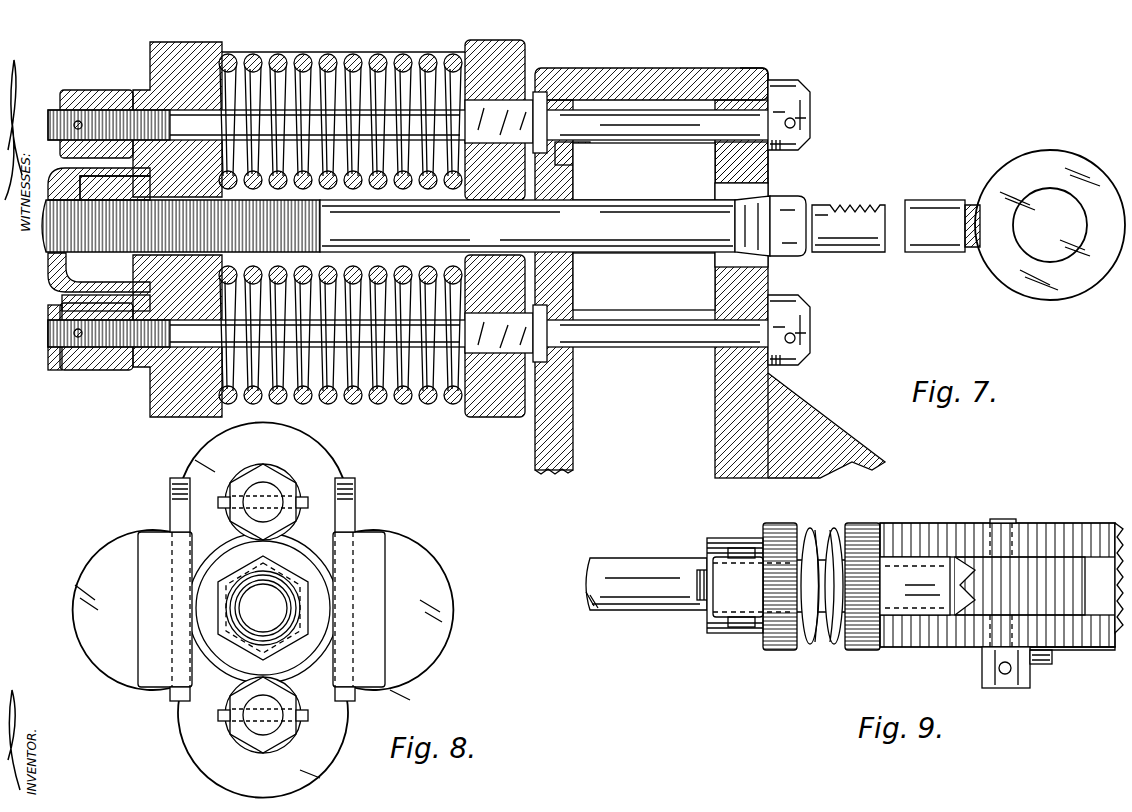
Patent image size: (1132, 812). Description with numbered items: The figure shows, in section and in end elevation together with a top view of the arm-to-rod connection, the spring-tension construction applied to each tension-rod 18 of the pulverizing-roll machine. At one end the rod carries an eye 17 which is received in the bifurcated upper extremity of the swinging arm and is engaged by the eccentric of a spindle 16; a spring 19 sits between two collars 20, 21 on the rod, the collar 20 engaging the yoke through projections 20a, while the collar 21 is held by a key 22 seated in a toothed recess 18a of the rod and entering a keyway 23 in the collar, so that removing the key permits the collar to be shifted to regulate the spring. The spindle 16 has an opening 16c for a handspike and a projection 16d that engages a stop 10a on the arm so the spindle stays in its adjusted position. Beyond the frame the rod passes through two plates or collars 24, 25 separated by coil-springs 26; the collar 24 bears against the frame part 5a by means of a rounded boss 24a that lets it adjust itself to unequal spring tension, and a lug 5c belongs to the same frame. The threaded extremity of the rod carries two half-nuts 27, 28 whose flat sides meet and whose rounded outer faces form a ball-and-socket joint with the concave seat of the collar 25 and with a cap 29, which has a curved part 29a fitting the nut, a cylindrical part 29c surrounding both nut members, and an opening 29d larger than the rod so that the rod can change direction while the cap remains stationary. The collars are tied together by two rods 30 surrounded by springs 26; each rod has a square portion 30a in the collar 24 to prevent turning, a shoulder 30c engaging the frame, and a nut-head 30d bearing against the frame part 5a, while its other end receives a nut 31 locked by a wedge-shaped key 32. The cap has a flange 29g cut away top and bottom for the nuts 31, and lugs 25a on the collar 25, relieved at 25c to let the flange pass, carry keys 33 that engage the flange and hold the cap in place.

In FIG. 7, the frame part 5a is at (768, 72).
In FIG. 7, the lug of the frame 5c is at (575, 172).
In FIG. 9, the stop 10a is at (1052, 658).
In FIG. 9, the spindle 16 is at (1012, 520).
In FIG. 9, the opening 16c is at (1003, 675).
In FIG. 9, the projection 16d is at (1040, 666).
In FIG. 7, the eye 17 is at (1041, 152).
In FIG. 9, the eye 17 is at (1035, 560).
In FIG. 7, the tension-rod 18 is at (932, 200).
In FIG. 9, the tension-rod 18 is at (630, 568).
In FIG. 7, the recess 18a is at (846, 204).
In FIG. 9, the recess 18a is at (700, 592).
In FIG. 9, the spring 19 is at (825, 528).
In FIG. 9, the collar 20 is at (872, 523).
In FIG. 9, the projections 20a is at (905, 555).
In FIG. 9, the collar 21 is at (778, 523).
In FIG. 7, the key 22 is at (758, 192).
In FIG. 9, the key 22 is at (745, 630).
In FIG. 7, the keyway 23 is at (588, 200).
In FIG. 7, the collar 24 is at (528, 62).
In FIG. 7, the boss 24a is at (530, 272).
In FIG. 7, the collar 25 is at (150, 61).
In FIG. 8, the lugs 25a is at (143, 588).
In FIG. 8, the cut-away portion of lug 25c is at (166, 634).
In FIG. 7, the coil-springs 26 is at (366, 398).
In FIG. 7, the half-nut 27 is at (128, 277).
In FIG. 7, the half-nut 28 is at (64, 304).
In FIG. 7, the cap 29 is at (66, 286).
In FIG. 7, the curved part 29a is at (66, 170).
In FIG. 7, the cylindrical part 29c is at (50, 332).
In FIG. 7, the opening 29d is at (56, 262).
In FIG. 8, the flange 29g is at (316, 548).
In FIG. 7, the rods 30 is at (425, 405).
In FIG. 8, the rods 30 is at (249, 516).
In FIG. 7, the angular portion 30a is at (547, 108).
In FIG. 7, the shoulder 30c is at (600, 68).
In FIG. 7, the nut-heads 30d is at (802, 96).
In FIG. 7, the nuts 31 is at (64, 95).
In FIG. 8, the nuts 31 is at (286, 490).
In FIG. 7, the keys 32 is at (78, 119).
In FIG. 8, the keys 32 is at (225, 496).
In FIG. 8, the keys 33 is at (356, 492).